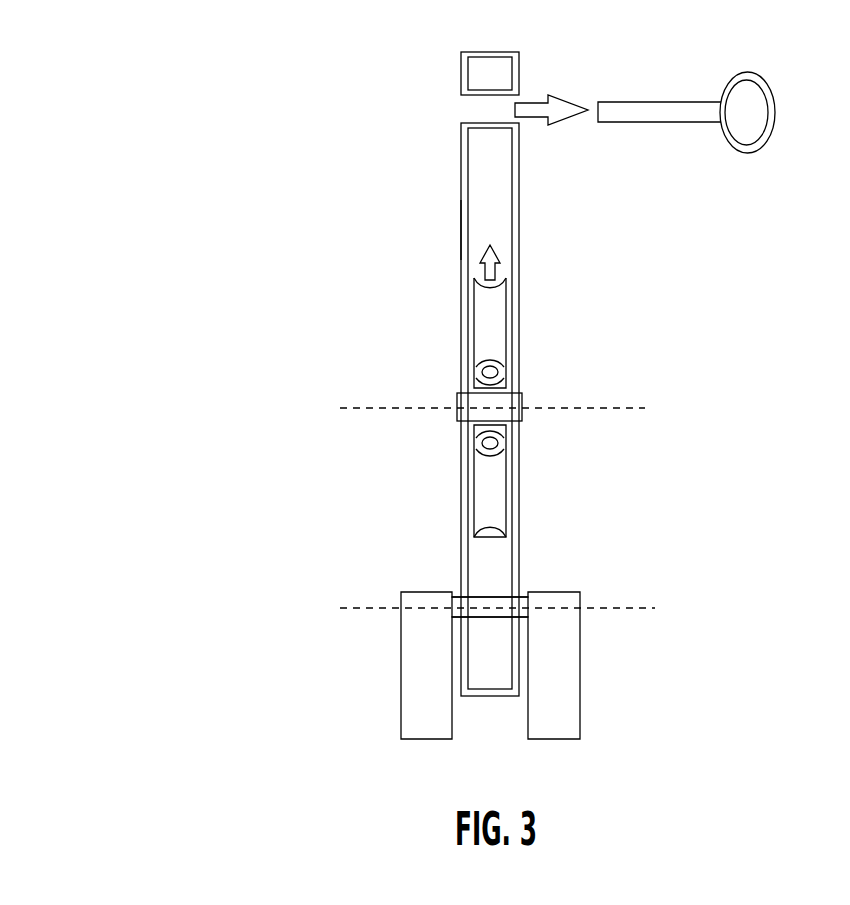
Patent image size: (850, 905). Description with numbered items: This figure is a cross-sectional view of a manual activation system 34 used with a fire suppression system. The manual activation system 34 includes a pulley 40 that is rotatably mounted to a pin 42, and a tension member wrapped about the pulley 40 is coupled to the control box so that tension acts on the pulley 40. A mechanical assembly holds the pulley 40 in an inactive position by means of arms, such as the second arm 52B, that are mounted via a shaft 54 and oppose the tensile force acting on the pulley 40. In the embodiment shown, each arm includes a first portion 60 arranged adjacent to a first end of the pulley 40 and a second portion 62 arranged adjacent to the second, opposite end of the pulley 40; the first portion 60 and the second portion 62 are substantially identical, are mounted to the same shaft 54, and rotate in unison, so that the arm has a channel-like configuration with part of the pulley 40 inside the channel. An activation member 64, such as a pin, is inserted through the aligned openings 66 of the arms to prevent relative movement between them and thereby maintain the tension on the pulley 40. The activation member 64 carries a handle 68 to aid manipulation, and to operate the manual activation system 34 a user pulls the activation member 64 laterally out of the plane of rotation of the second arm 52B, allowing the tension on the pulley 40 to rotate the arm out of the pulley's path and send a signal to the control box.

The manual activation system 34 is at (200, 78).
The pulley 40 is at (490, 323).
The pin 42 is at (460, 391).
The second arm 52B is at (455, 230).
The shaft 54 is at (517, 603).
The first portion 60 is at (516, 197).
The second portion 62 is at (462, 178).
The activation member 64 is at (658, 108).
The opening 66 is at (470, 108).
The handle 68 is at (752, 115).